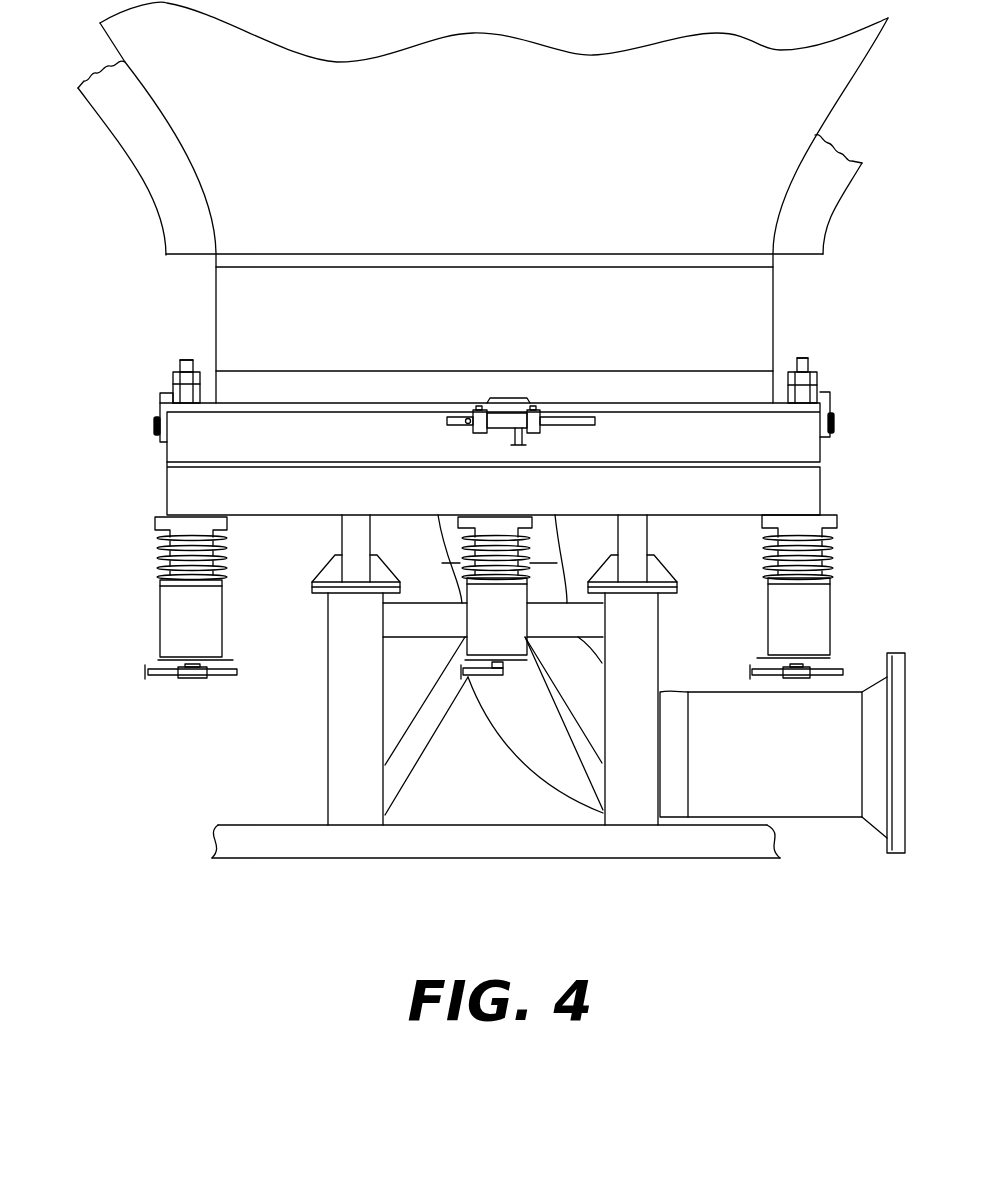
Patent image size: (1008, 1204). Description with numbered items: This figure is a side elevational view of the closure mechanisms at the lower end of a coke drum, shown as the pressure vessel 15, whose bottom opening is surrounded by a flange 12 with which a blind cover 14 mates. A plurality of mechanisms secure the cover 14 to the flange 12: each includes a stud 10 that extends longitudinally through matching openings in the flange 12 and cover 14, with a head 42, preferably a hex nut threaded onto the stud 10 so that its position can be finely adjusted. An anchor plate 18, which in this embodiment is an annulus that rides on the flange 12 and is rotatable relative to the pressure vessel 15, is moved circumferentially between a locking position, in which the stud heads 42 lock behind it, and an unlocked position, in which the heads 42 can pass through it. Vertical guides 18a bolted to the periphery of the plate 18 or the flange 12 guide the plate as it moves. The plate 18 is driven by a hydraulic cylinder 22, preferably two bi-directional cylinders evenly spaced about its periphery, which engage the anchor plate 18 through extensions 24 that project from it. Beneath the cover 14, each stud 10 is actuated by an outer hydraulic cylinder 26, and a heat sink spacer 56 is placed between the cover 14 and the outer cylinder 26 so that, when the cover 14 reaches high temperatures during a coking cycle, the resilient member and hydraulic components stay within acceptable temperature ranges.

The stud 10 is at (186, 350).
The flange 12 is at (780, 440).
The cover 14 is at (797, 502).
The pressure vessel 15 is at (574, 168).
The anchor plate 18 is at (160, 407).
The vertical guides 18a is at (833, 420).
The hydraulic cylinder 22 is at (510, 422).
The extensions 24 is at (447, 421).
The outer cylinder 26 is at (172, 613).
The head 42 is at (173, 373).
The heat sink spacer 56 is at (150, 555).